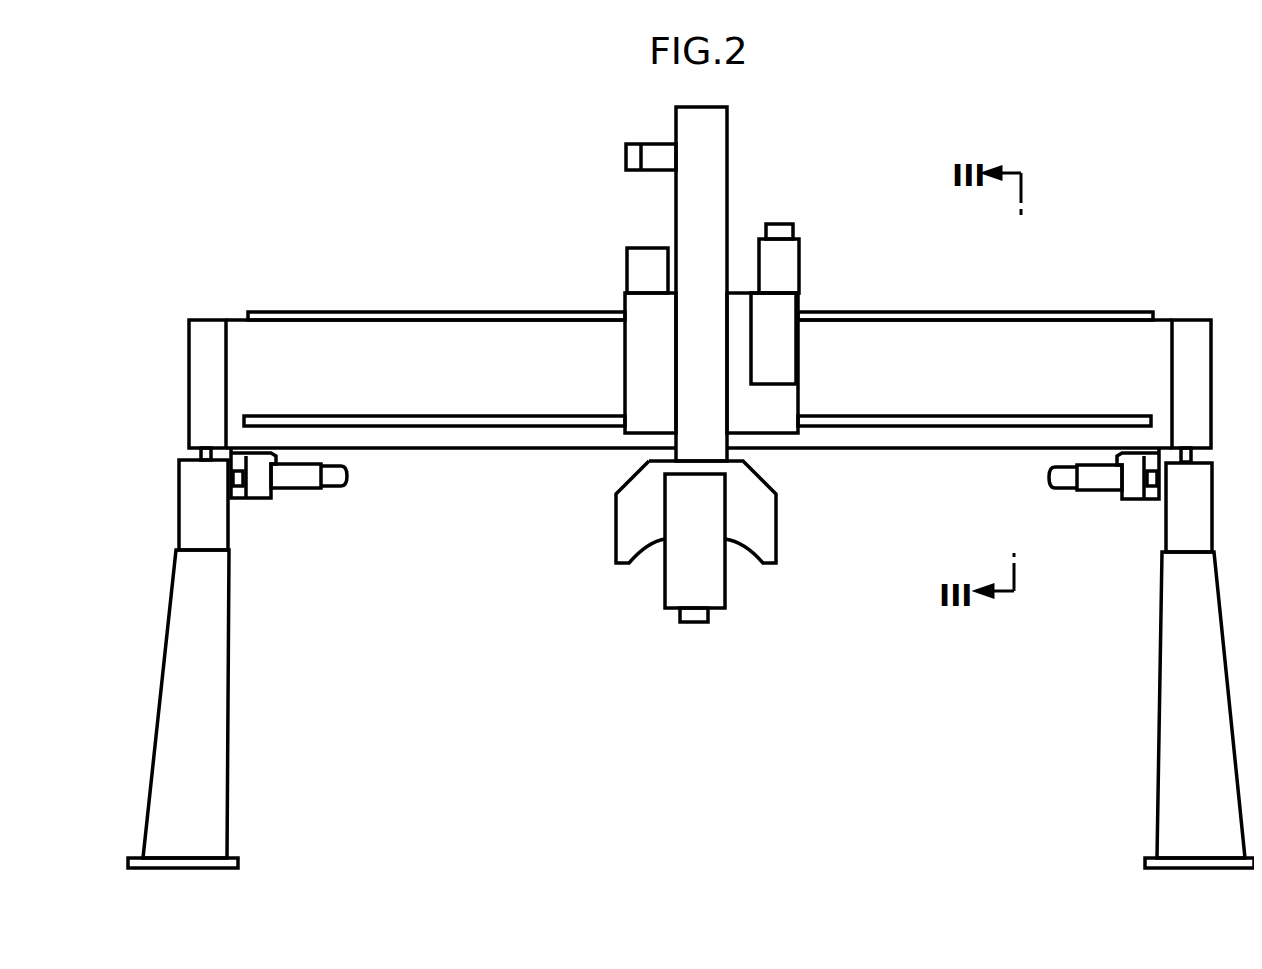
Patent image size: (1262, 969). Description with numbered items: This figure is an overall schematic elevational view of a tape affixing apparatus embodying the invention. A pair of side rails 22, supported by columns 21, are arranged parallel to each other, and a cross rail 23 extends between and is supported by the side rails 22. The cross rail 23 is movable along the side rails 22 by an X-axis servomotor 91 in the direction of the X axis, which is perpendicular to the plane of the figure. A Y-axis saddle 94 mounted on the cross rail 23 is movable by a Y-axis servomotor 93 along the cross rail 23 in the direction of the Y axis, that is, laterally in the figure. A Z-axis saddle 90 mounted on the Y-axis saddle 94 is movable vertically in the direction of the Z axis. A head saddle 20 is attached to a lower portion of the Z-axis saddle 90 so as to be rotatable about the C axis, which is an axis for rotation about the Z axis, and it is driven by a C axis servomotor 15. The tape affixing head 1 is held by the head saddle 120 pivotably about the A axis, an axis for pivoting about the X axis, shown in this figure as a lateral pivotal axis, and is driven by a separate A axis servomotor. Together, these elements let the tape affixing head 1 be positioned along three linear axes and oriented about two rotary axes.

The tape affixing head 1 is at (668, 597).
The C axis servomotor 15 is at (633, 143).
The head saddle 20 is at (700, 621).
The columns 21 is at (218, 778).
The side rails 22 is at (188, 518).
The cross rail 23 is at (290, 328).
The Z-axis saddle 90 is at (726, 124).
The X-axis servomotor 91 is at (345, 482).
The Y-axis servomotor 93 is at (785, 250).
The Y-axis saddle 94 is at (775, 432).
The head saddle 120 is at (615, 500).